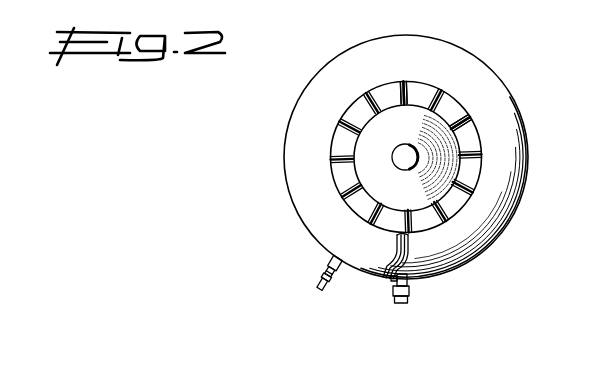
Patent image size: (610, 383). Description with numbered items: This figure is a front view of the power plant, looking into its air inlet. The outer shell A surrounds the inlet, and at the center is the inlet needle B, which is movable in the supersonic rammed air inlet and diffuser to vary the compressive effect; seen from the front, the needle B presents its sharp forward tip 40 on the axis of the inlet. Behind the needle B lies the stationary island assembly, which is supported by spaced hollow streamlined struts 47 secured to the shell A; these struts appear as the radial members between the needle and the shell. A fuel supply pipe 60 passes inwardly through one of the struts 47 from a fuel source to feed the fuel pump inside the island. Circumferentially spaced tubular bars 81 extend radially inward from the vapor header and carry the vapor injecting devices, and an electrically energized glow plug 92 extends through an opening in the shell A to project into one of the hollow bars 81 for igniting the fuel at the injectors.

The shell A is at (531, 160).
The inlet needle B is at (367, 161).
The tubular bars 81 is at (403, 82).
The struts 47 is at (458, 124).
The forward tip 40 is at (394, 161).
The fuel supply pipe 60 is at (410, 293).
The glow plug 92 is at (327, 285).